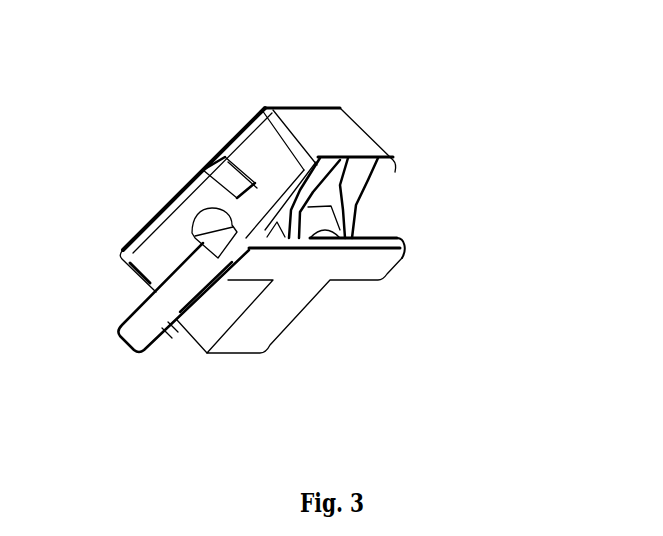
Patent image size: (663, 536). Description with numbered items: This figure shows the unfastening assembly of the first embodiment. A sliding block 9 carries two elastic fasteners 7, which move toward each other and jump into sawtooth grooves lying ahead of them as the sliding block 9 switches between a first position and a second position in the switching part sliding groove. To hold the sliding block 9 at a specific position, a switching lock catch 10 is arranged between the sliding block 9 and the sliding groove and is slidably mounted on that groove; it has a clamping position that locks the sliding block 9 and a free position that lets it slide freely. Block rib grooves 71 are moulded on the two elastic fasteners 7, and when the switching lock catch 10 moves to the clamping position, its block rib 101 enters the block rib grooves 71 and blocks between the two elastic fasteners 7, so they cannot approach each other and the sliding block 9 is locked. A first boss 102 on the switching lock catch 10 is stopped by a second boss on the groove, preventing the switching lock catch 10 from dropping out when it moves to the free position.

The elastic fastener 7 is at (365, 190).
The sliding block 9 is at (175, 207).
The switching lock catch 10 is at (333, 128).
The block rib groove 71 is at (372, 163).
The block rib 101 is at (337, 237).
The first boss 102 is at (165, 340).